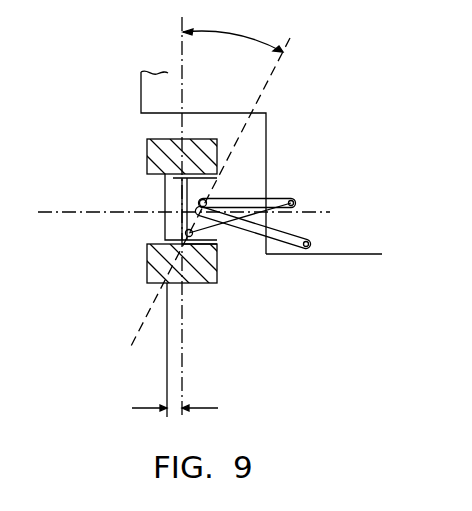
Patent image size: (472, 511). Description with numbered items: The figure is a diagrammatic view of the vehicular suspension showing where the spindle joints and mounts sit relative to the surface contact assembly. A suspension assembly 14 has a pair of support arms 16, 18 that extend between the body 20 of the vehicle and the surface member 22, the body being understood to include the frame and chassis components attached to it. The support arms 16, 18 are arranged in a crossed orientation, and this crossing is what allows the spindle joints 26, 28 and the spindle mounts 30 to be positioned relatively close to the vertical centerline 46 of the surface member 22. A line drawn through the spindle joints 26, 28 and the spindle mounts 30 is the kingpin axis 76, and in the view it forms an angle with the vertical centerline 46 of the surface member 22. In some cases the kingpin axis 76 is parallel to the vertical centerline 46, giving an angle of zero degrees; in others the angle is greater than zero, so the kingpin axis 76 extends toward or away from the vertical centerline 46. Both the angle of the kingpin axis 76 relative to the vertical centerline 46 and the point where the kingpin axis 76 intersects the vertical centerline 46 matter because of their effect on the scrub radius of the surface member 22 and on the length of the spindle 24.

The suspension assembly 14 is at (248, 171).
The support arm 16 is at (278, 200).
The support arm 18 is at (293, 236).
The body of the vehicle 20 is at (357, 254).
The surface member 22 is at (150, 272).
The spindle 24 is at (150, 218).
The spindle joint 26 is at (175, 195).
The spindle joint 28 is at (187, 233).
The spindle mount 30 is at (200, 201).
The vertical centerline 46 is at (182, 46).
The kingpin axis 76 is at (270, 77).